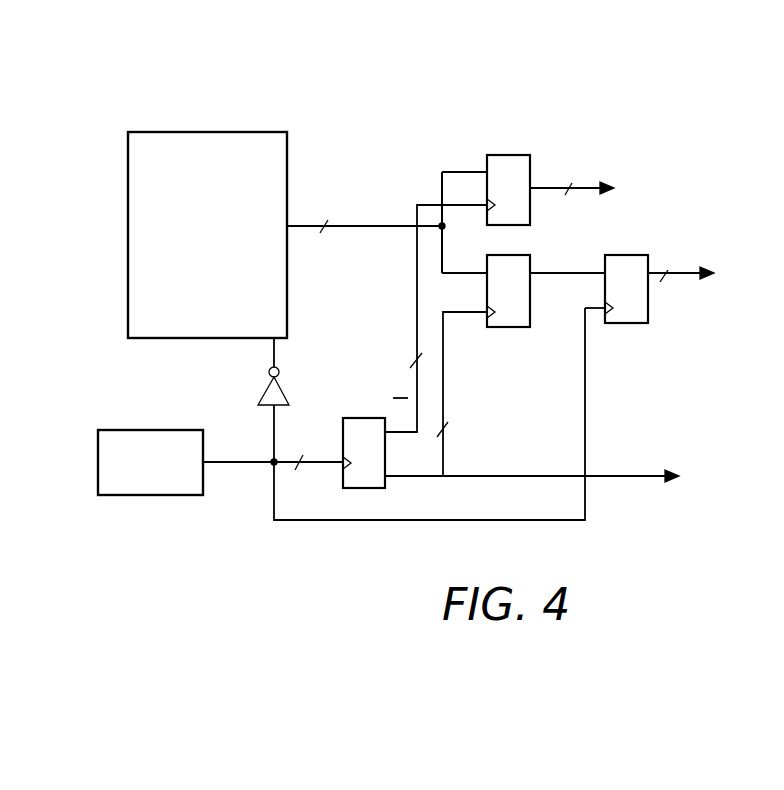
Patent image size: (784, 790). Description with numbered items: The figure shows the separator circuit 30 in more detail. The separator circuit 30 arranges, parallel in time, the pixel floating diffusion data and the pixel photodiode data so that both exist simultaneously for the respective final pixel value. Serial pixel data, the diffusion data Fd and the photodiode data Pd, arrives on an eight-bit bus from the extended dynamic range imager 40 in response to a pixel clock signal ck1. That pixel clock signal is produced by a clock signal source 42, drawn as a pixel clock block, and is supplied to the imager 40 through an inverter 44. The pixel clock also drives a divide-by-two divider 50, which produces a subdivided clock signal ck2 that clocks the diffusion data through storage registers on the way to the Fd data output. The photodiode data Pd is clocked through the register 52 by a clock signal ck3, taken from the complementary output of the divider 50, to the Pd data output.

The separator circuit 30 is at (252, 611).
The imager 40 is at (215, 131).
The clock signal source 42 is at (153, 495).
The inverter 44 is at (258, 396).
The divider 50 is at (367, 488).
The register 52 is at (508, 155).